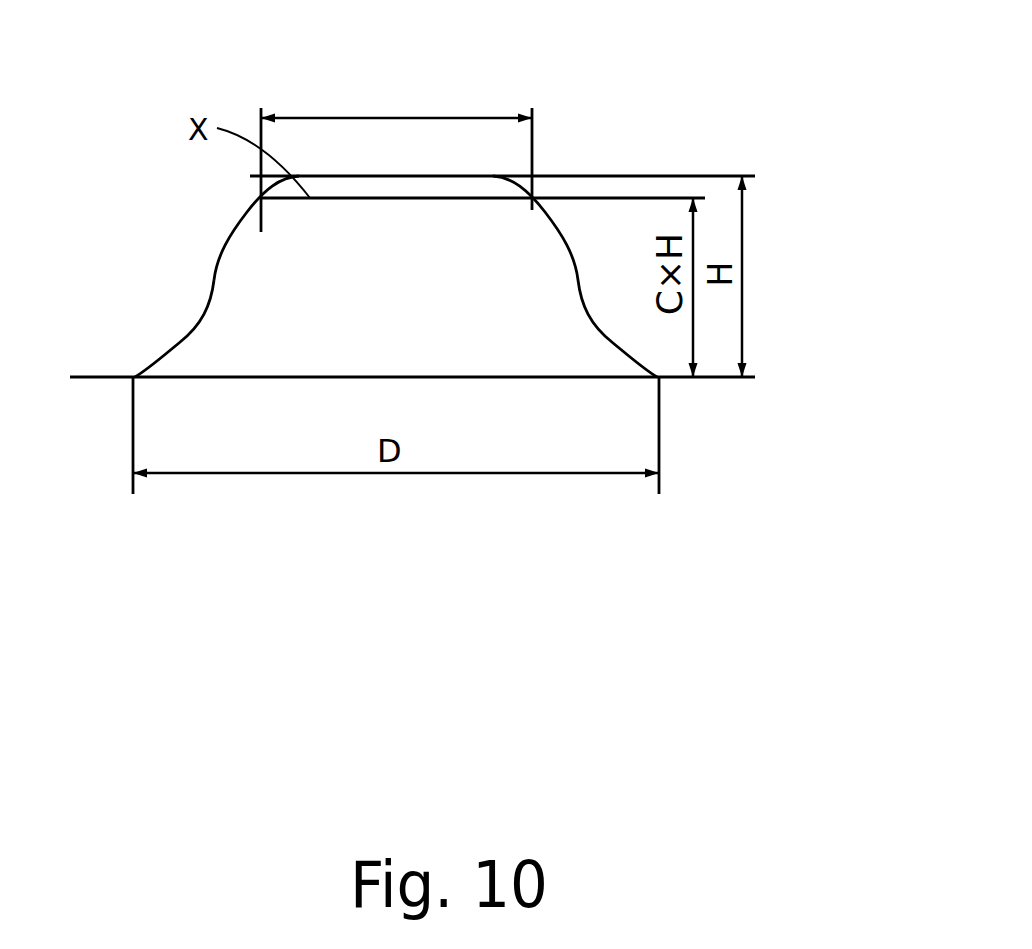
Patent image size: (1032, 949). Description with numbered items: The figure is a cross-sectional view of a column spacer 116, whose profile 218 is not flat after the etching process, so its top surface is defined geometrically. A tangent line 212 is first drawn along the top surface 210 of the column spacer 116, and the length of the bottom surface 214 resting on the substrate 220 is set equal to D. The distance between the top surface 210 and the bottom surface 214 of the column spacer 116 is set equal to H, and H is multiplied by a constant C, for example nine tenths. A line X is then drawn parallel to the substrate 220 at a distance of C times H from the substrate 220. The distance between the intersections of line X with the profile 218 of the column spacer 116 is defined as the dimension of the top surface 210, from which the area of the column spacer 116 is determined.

The column spacer 116 is at (722, 85).
The top surface 210 is at (470, 176).
The tangent line 212 is at (710, 176).
The bottom surface 214 is at (227, 377).
The profile 218 is at (226, 228).
The substrate 220 is at (97, 402).